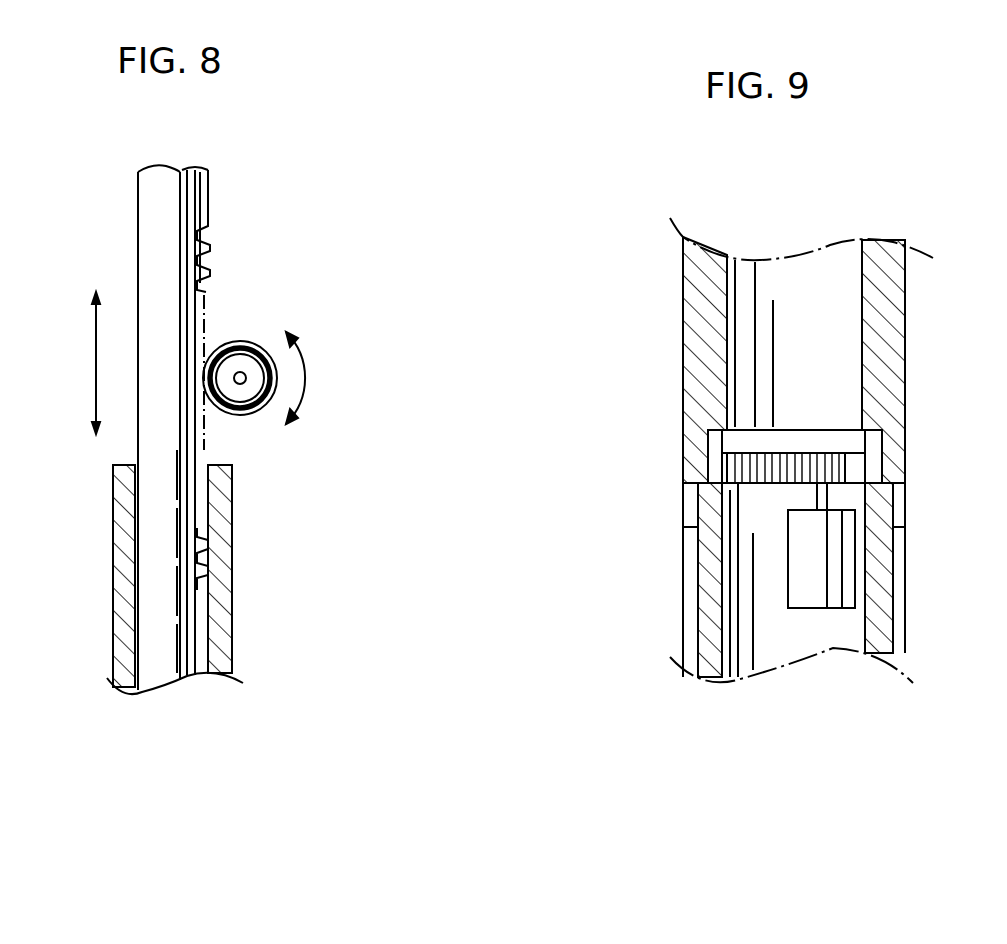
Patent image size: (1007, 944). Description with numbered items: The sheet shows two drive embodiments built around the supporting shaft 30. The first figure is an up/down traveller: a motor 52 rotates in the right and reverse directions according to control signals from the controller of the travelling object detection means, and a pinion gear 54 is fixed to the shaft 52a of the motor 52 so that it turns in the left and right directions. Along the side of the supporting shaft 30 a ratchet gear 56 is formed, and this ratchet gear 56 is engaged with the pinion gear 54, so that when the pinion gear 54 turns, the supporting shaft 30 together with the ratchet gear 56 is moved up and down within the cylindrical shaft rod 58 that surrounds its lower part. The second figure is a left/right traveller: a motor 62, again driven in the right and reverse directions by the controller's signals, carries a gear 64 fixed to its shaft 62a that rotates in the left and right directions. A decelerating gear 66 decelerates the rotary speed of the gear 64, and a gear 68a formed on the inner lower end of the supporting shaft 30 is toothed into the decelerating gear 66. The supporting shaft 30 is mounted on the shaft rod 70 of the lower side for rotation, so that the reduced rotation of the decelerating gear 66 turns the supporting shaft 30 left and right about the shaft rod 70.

In FIG. 8, the supporting shaft 30 is at (150, 222).
In FIG. 9, the supporting shaft 30 is at (895, 292).
In FIG. 8, the ratchet gear 56 is at (212, 240).
In FIG. 8, the motor 52 is at (253, 416).
In FIG. 8, the shaft 52a is at (240, 372).
In FIG. 8, the pinion gear 54 is at (262, 340).
In FIG. 8, the cylindrical shaft rod 58 is at (232, 567).
In FIG. 9, the gear 64 is at (813, 453).
In FIG. 9, the decelerating gear 66 is at (767, 493).
In FIG. 9, the gear 68a is at (872, 441).
In FIG. 9, the motor 62 is at (833, 562).
In FIG. 9, the shaft 62a is at (828, 493).
In FIG. 9, the shaft rod 70 is at (812, 627).